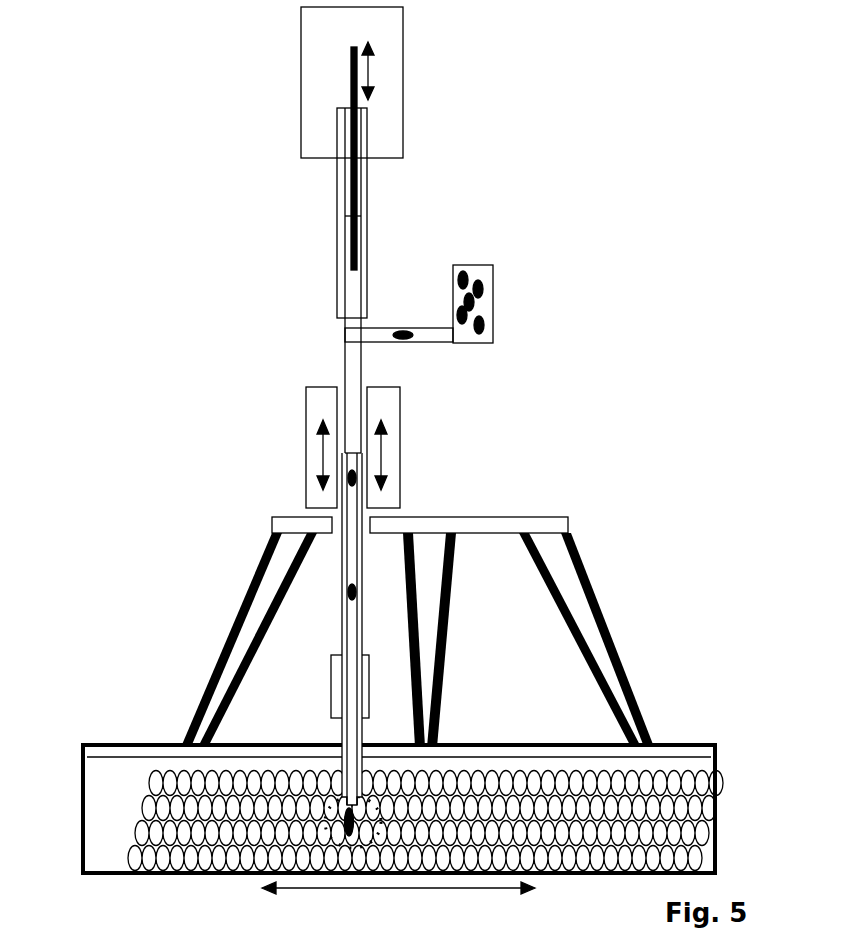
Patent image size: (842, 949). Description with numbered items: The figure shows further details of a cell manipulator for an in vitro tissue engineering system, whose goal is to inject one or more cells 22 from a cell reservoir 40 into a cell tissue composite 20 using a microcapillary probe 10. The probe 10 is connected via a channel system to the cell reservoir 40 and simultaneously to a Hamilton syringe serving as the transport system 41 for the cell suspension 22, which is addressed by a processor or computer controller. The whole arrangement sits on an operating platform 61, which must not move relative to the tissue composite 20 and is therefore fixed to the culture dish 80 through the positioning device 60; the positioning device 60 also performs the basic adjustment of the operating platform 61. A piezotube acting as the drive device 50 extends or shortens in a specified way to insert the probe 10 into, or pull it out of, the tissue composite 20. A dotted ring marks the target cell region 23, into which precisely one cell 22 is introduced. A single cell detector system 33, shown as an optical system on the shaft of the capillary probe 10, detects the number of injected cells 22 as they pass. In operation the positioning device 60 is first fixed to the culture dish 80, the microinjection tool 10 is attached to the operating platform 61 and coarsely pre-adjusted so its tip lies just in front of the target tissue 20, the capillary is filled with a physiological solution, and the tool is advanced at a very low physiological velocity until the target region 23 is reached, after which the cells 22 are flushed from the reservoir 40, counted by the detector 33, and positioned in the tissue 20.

The probe 10 is at (355, 742).
The cell tissue composite 20 is at (683, 780).
The cells 22 is at (484, 303).
The target cell region 23 is at (355, 818).
The single cell detector system 33 is at (363, 697).
The cell reservoir 40 is at (492, 277).
The transport system 41 is at (380, 133).
The drive device 50 is at (396, 453).
The positioning device 60 is at (366, 718).
The operating platform 61 is at (440, 531).
The culture dish 80 is at (663, 745).